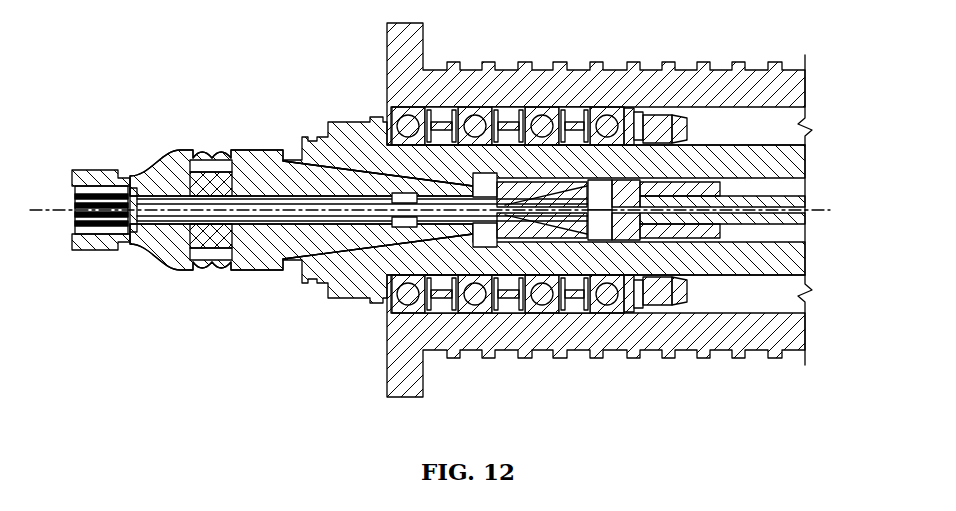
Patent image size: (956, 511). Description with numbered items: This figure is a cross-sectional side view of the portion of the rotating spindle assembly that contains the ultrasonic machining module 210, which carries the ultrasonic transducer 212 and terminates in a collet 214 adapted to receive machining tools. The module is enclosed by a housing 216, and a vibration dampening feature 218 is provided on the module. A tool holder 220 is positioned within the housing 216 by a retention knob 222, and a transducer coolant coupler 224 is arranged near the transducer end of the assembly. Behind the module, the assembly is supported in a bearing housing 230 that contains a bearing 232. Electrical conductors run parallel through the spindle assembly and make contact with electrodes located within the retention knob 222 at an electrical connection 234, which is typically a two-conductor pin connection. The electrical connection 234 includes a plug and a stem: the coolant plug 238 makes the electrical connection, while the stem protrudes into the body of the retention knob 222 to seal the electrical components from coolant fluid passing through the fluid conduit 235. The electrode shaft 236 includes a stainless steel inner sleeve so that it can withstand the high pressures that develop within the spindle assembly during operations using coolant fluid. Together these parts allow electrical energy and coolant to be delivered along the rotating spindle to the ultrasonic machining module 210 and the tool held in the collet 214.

The ultrasonic machining module 210 is at (260, 276).
The ultrasonic transducer 212 is at (235, 257).
The collet 214 is at (73, 226).
The housing 216 is at (190, 150).
The vibration dampening feature 218 is at (225, 151).
The tool holder 220 is at (300, 138).
The retention knob 222 is at (403, 229).
The transducer coolant coupler 224 is at (394, 234).
The bearing housing 230 is at (556, 62).
The bearing 232 is at (474, 130).
The electrical connection 234 is at (537, 246).
The fluid conduit 235 is at (686, 214).
The electrode shaft 236 is at (664, 186).
The coolant plug 238 is at (567, 230).